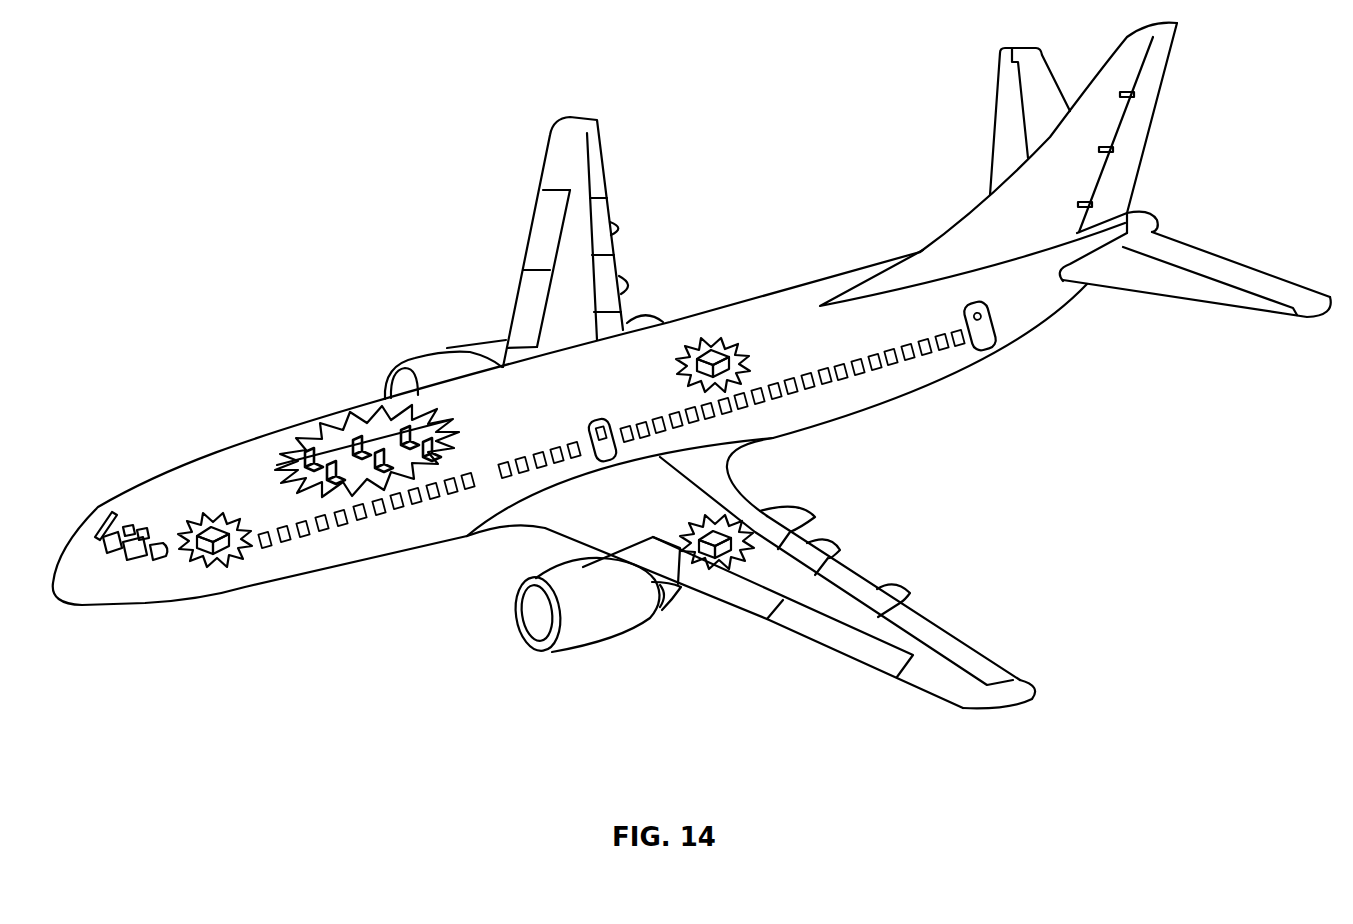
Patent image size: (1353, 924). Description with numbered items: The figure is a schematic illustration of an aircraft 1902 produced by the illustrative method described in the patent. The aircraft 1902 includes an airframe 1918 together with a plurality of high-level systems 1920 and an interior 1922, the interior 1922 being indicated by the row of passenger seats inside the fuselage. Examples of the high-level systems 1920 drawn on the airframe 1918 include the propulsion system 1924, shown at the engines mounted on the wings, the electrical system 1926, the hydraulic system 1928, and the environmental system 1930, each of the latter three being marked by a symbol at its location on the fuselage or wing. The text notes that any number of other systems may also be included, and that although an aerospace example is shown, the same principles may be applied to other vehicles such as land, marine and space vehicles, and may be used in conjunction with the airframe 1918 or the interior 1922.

The aircraft 1902 is at (354, 100).
The airframe 1918 is at (328, 392).
The high-level systems 1920 is at (1078, 553).
The interior 1922 is at (340, 483).
The propulsion system 1924 is at (433, 363).
The electrical system 1926 is at (213, 532).
The hydraulic system 1928 is at (717, 533).
The environmental system 1930 is at (710, 355).